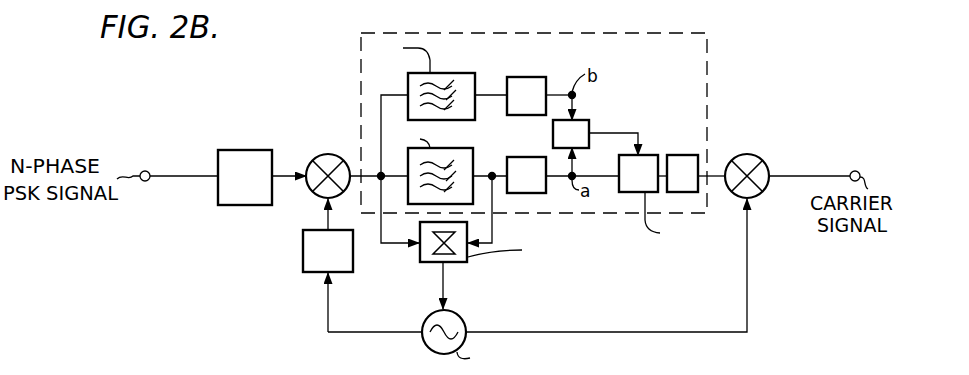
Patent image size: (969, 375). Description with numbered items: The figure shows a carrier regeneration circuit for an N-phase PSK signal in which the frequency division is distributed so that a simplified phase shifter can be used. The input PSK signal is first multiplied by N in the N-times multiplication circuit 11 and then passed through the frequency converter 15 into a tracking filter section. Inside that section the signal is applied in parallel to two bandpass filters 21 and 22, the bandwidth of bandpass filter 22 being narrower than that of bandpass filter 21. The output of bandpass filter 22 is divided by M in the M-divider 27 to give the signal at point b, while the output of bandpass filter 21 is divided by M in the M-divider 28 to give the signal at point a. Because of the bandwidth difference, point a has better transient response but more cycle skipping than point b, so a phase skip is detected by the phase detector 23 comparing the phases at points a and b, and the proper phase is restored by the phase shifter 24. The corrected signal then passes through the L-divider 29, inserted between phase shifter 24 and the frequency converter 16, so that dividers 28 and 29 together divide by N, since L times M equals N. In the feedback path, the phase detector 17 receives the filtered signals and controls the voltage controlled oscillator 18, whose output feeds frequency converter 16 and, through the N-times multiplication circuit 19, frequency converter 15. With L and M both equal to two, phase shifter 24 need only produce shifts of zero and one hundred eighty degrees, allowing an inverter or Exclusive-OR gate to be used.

The N-times multiplication circuit 11 is at (250, 150).
The frequency converter 15 is at (328, 154).
The frequency converter 16 is at (755, 155).
The phase detector 17 is at (462, 262).
The voltage controlled oscillator 18 is at (462, 322).
The N-times multiplication circuit 19 is at (353, 258).
The bandpass filter 21 is at (455, 148).
The bandpass filter 22 is at (460, 73).
The phase detector 23 is at (589, 121).
The phase shifter 24 is at (650, 155).
The 1/M divider 27 is at (533, 77).
The 1/M divider 28 is at (520, 157).
The 1/L divider 29 is at (680, 155).